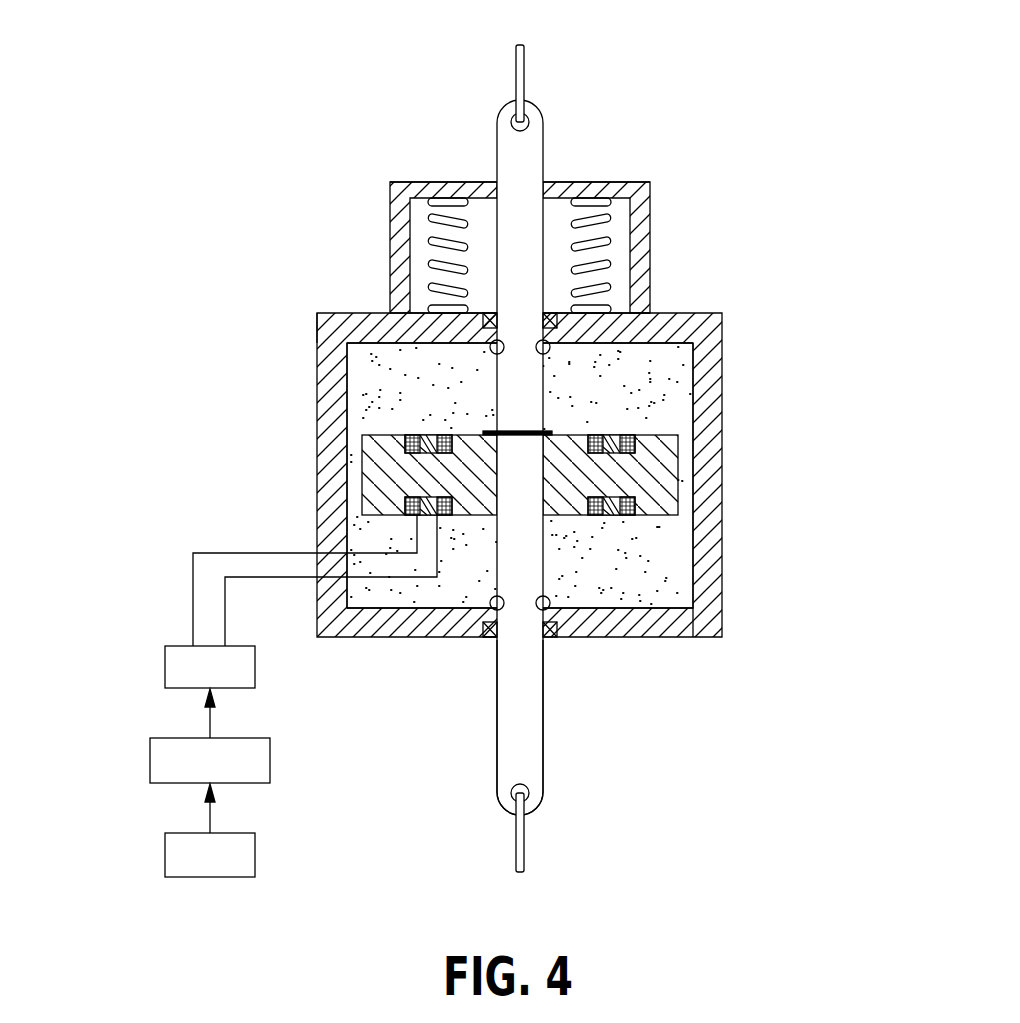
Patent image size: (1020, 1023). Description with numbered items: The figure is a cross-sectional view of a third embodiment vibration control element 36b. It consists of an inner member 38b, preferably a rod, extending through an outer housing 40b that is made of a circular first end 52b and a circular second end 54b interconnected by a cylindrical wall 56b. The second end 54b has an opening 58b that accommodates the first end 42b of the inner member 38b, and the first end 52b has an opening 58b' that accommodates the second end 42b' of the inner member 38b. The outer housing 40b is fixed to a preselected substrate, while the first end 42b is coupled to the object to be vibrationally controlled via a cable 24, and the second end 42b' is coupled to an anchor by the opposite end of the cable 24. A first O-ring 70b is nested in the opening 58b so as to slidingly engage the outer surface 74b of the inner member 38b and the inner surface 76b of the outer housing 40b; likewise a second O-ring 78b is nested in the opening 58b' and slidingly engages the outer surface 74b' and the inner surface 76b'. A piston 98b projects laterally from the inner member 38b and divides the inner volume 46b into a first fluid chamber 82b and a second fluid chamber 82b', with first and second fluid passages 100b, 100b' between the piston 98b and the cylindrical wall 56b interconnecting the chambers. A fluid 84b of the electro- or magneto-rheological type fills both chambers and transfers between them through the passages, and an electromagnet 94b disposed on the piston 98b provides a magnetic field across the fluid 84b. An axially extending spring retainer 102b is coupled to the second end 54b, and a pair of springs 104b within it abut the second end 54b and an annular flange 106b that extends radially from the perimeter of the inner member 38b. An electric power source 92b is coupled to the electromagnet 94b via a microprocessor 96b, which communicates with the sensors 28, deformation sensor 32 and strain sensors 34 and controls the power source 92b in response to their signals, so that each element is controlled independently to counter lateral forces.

The cable 24 is at (517, 73).
The sensors 28 is at (156, 830).
The deformation sensor 32 is at (156, 830).
The strain sensors 34 is at (172, 845).
The vibration control element 36b is at (717, 52).
The inner member 38b is at (548, 338).
The outer housing 40b is at (550, 372).
The first end of the inner member 42b is at (617, 457).
The second end of the inner member 42b' is at (562, 727).
The inner volume 46b is at (358, 376).
The first end of the outer housing 52b is at (724, 627).
The second end of the outer housing 54b is at (655, 306).
The cylindrical wall 56b is at (710, 397).
The opening 58b is at (384, 335).
The opening 58b' is at (626, 635).
The first O-ring 70b is at (595, 301).
The outer surface of the inner member 74b is at (676, 288).
The outer surface of the inner member 74b' is at (475, 661).
The inner surface of the outer housing 76b is at (625, 342).
The inner surface of the outer housing 76b' is at (445, 631).
The second O-ring 78b is at (487, 641).
The first fluid chamber 82b is at (465, 388).
The second fluid chamber 82b' is at (454, 529).
The fluid 84b is at (377, 418).
The electric power source 92b is at (170, 655).
The electromagnet 94b is at (610, 433).
The microprocessor 96b is at (155, 750).
The piston 98b is at (665, 448).
The first fluid passage 100b is at (354, 475).
The second fluid passage 100b' is at (680, 475).
The spring retainer 102b is at (399, 206).
The springs 104b is at (437, 240).
The annular flange 106b is at (432, 182).